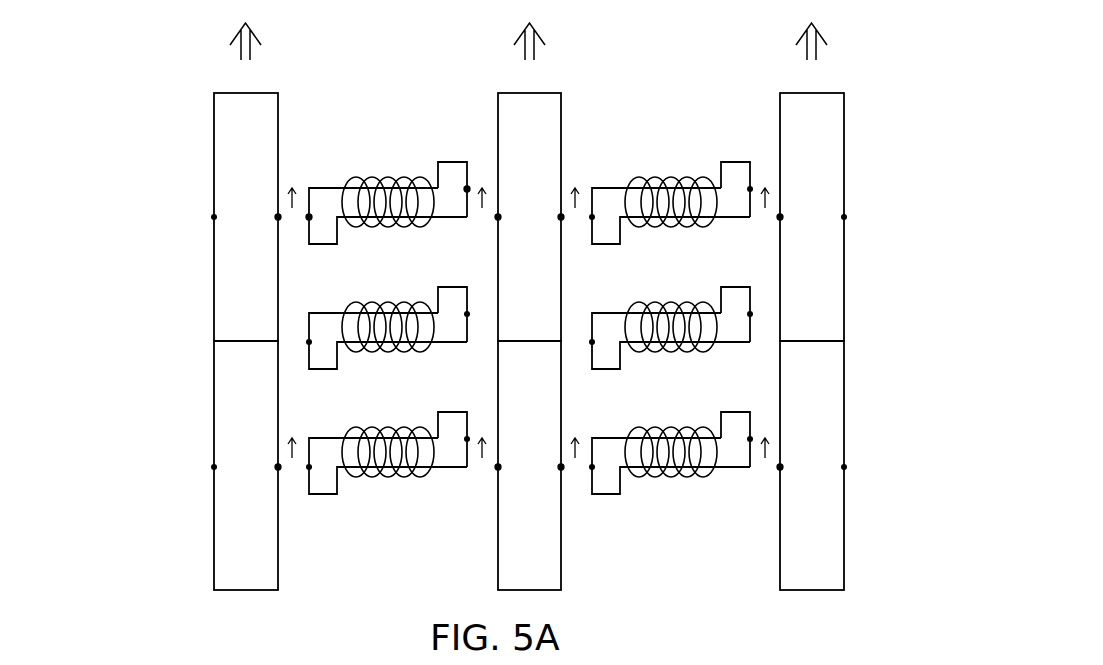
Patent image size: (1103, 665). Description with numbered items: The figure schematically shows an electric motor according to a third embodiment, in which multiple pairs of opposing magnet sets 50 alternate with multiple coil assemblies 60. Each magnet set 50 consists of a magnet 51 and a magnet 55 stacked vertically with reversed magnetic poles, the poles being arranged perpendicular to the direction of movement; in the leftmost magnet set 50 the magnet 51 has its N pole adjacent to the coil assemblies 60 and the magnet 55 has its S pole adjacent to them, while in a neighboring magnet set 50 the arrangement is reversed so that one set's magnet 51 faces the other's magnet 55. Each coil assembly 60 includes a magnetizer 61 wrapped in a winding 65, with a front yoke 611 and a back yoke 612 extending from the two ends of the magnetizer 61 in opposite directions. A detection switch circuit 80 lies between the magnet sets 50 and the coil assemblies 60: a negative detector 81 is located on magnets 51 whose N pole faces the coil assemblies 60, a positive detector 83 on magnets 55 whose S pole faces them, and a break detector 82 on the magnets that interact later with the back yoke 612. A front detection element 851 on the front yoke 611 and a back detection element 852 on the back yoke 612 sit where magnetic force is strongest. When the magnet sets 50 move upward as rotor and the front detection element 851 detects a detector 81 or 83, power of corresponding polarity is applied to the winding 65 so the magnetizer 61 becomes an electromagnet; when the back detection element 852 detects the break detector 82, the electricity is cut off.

The magnet set 50 is at (508, 295).
The magnet 51 is at (220, 165).
The magnet 55 is at (218, 532).
The coil assembly 60 is at (526, 262).
The magnetizer 61 is at (529, 288).
The front yoke 611 is at (338, 224).
The back yoke 612 is at (453, 167).
The winding 65 is at (385, 228).
The detection switch circuit 80 is at (529, 367).
The negative detector 81 is at (280, 219).
The break detector 82 is at (496, 218).
The positive detector 83 is at (563, 219).
The front detection element 851 is at (308, 213).
The back detection element 852 is at (470, 183).